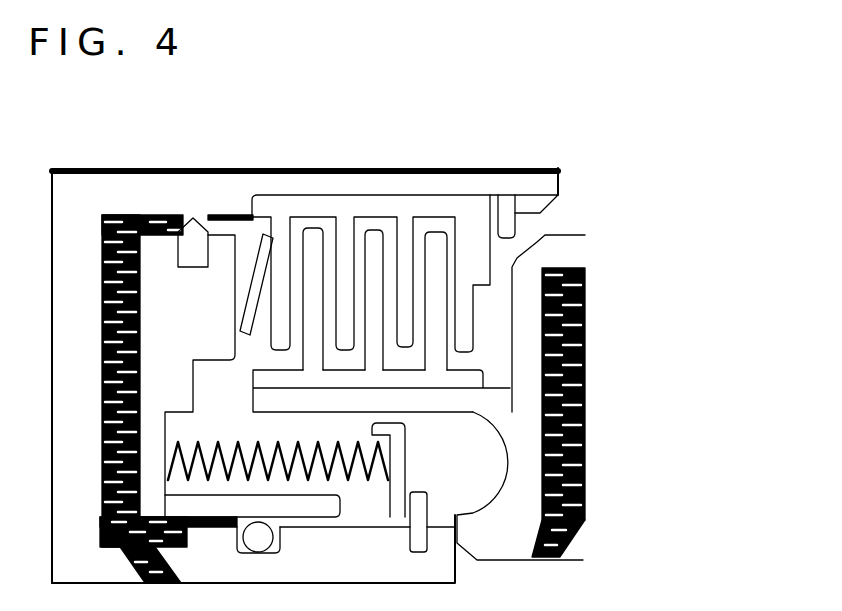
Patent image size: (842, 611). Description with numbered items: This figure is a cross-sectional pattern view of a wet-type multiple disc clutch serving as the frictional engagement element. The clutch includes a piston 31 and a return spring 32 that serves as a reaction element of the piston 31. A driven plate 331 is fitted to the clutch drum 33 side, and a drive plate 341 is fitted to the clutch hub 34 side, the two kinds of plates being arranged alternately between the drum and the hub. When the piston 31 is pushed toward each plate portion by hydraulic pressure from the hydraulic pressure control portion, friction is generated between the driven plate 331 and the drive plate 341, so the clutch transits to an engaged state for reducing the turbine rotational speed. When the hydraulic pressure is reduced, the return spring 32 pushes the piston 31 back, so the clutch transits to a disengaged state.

The piston 31 is at (235, 235).
The driven plate 331 is at (262, 248).
The clutch drum 33 is at (95, 175).
The clutch hub 34 is at (560, 240).
The drive plate 341 is at (310, 381).
The return spring 32 is at (345, 467).